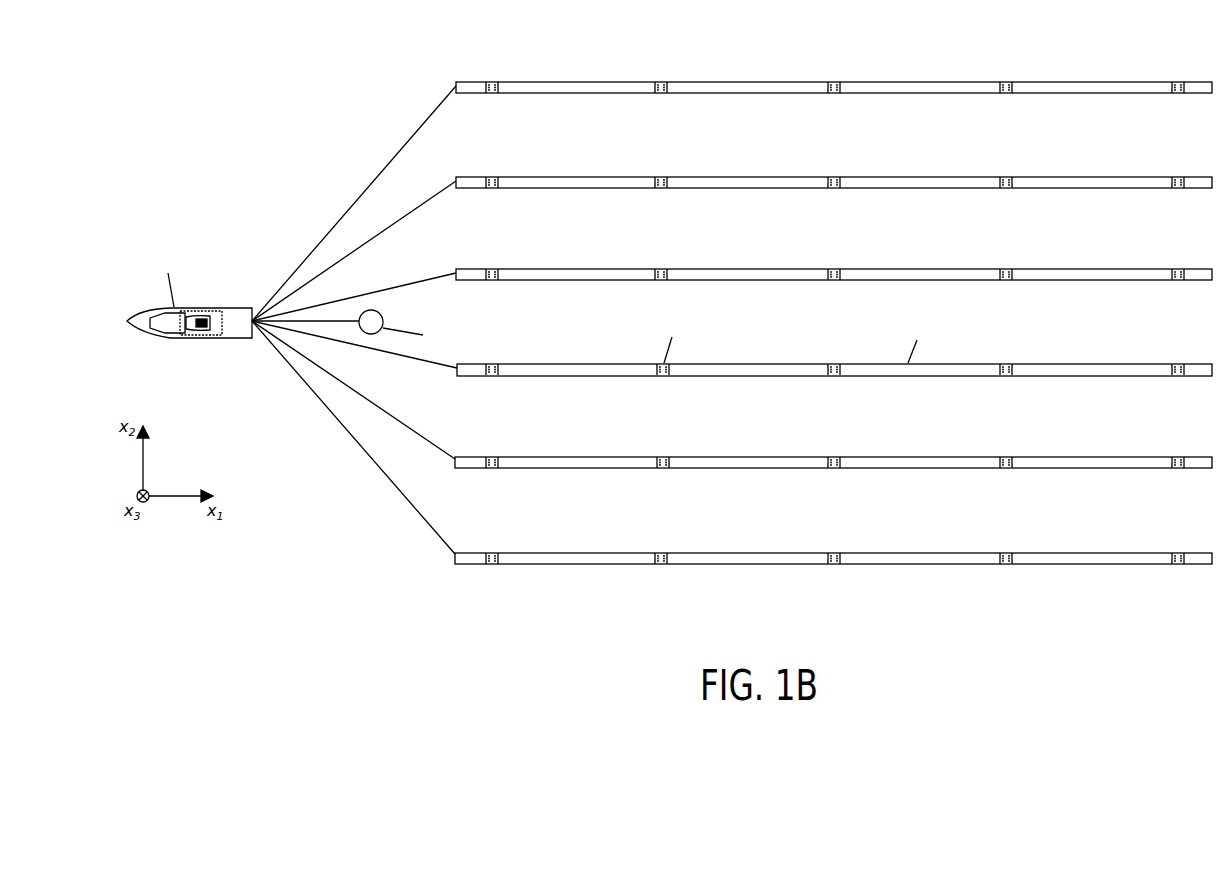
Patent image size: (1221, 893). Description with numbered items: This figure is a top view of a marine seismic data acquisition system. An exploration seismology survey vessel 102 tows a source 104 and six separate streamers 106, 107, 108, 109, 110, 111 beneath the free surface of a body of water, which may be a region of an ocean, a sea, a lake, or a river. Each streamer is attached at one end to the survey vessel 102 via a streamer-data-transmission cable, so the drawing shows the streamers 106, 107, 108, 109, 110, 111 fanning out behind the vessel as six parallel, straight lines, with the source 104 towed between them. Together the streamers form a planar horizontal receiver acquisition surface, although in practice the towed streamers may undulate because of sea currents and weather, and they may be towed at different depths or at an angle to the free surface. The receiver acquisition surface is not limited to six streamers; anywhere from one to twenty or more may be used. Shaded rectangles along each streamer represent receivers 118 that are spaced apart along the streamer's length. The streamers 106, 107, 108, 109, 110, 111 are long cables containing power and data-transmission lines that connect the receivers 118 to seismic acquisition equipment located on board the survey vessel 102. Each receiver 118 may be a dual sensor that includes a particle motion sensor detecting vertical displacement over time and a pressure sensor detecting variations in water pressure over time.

The survey vessel 102 is at (205, 295).
The source 104 is at (383, 314).
The streamer 106 is at (971, 80).
The streamer 107 is at (971, 175).
The streamer 108 is at (971, 268).
The streamer 109 is at (834, 380).
The streamer 110 is at (971, 456).
The streamer 111 is at (971, 552).
The receivers 118 is at (666, 377).